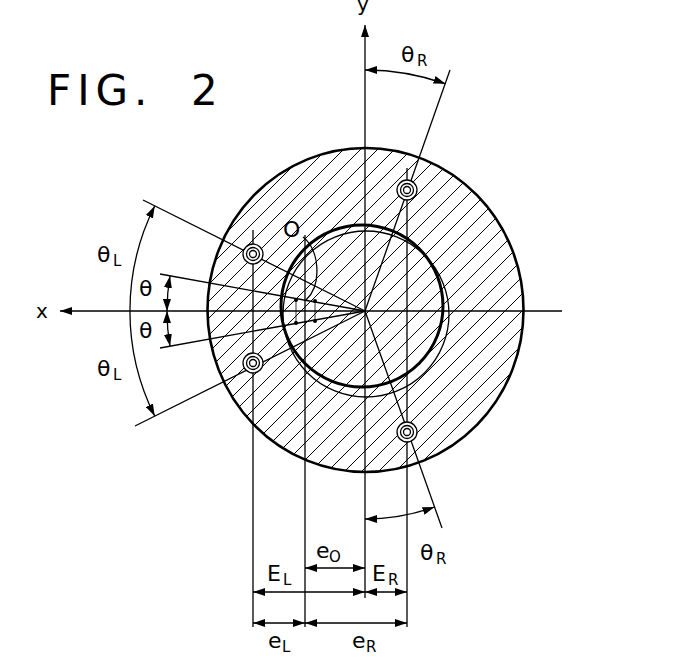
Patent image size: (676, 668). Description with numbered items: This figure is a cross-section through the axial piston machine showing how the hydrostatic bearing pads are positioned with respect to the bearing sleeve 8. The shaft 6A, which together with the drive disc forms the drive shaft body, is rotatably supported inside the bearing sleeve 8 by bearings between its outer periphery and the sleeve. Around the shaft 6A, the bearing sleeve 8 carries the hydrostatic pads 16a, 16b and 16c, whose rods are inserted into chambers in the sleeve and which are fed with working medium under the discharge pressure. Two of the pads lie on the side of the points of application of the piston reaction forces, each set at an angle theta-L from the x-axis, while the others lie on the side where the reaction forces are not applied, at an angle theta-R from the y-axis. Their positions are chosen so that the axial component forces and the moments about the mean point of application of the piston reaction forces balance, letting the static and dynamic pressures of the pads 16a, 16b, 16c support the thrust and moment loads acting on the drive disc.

The bearing sleeve 8 is at (501, 399).
The shaft 6A is at (449, 282).
The hydrostatic pad 16a is at (247, 247).
The hydrostatic pad 16b is at (249, 372).
The hydrostatic pad 16c is at (418, 190).